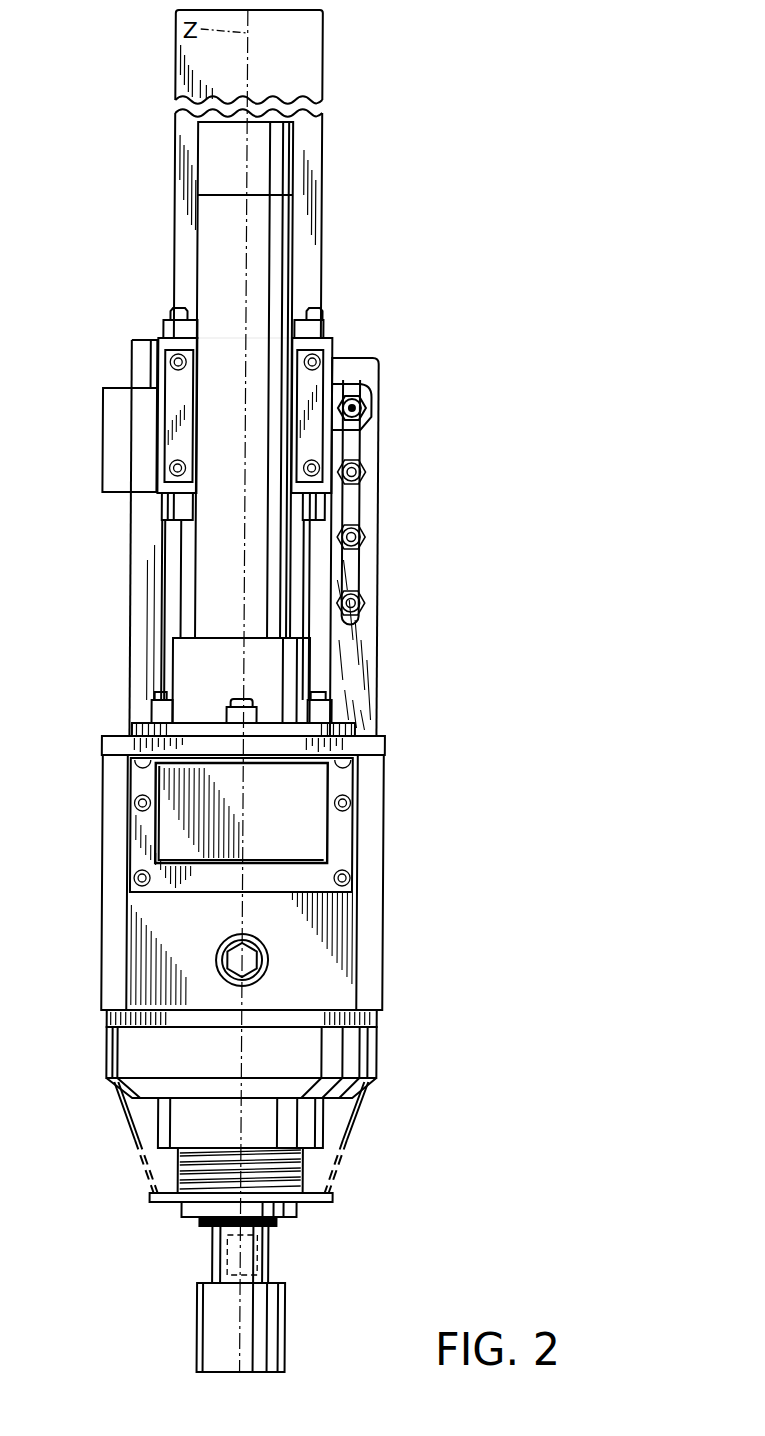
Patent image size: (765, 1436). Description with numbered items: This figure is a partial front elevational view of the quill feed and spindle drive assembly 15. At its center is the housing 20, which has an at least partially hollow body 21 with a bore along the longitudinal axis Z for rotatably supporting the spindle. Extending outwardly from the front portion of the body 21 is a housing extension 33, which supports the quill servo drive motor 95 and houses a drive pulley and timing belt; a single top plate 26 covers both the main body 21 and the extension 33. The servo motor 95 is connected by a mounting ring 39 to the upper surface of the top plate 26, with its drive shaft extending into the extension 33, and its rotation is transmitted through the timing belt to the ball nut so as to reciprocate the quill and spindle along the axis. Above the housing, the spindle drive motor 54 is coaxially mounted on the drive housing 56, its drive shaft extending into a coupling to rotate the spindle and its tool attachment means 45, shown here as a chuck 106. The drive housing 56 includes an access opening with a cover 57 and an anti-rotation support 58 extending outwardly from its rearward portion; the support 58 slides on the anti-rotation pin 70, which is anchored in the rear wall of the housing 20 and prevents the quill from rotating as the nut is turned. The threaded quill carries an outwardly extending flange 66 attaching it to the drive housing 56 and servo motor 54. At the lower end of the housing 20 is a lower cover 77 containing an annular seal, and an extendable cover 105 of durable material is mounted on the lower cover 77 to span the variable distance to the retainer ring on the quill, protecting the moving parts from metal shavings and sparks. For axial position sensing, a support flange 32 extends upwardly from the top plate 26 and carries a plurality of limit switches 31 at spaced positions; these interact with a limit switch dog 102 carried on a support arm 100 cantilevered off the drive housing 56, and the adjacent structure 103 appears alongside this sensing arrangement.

The quill feed and spindle drive assembly 15 is at (346, 332).
The housing 20 is at (407, 854).
The body 21 is at (401, 962).
The top plate 26 is at (376, 747).
The axial position sensors or limit switches 31 is at (366, 550).
The support flange 32 is at (373, 654).
The housing extension 33 is at (124, 846).
The mounting ring 39 is at (195, 730).
The tool attachment means 45 is at (265, 1238).
The spindle drive motor 54 is at (303, 43).
The drive housing 56 is at (179, 328).
The cover 57 is at (180, 404).
The anti-rotation support 58 is at (119, 391).
The flange 66 is at (182, 508).
The anti-rotation pin 70 is at (141, 587).
The lower cover 77 is at (374, 1049).
The quill servo drive motor 95 is at (236, 249).
The support arm 100 is at (336, 384).
The limit switch dog 102 is at (378, 399).
The mounting plate 103 is at (386, 450).
The extendable cover 105 is at (357, 1116).
The chuck 106 is at (260, 1308).